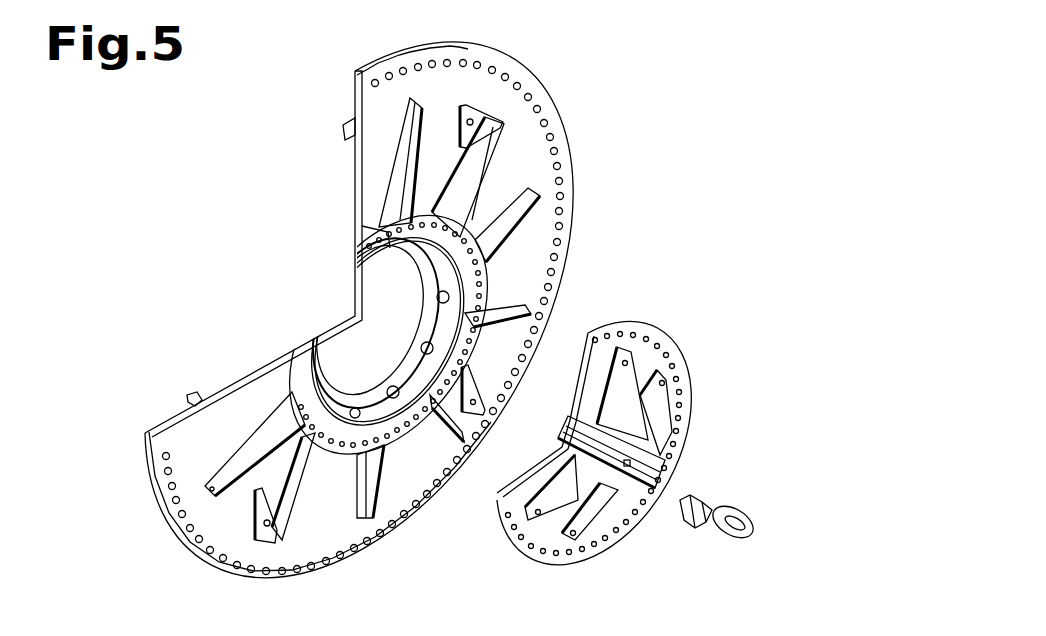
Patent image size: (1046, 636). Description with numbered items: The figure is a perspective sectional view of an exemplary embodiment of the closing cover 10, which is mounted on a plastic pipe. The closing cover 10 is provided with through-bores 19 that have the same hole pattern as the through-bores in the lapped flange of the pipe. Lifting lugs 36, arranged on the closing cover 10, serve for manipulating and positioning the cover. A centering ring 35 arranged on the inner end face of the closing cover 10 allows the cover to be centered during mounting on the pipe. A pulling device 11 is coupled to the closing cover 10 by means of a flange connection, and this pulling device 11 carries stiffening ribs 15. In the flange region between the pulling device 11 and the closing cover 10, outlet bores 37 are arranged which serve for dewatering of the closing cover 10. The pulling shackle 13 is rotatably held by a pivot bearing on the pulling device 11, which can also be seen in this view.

The closing cover 10 is at (600, 92).
The pulling device 11 is at (664, 510).
The pulling shackle 13 is at (748, 502).
The stiffening ribs 15 is at (473, 160).
The through-bores 19 is at (578, 202).
The centering ring 35 is at (345, 128).
The lifting lugs 36 is at (473, 110).
The outlet bores 37 is at (437, 333).